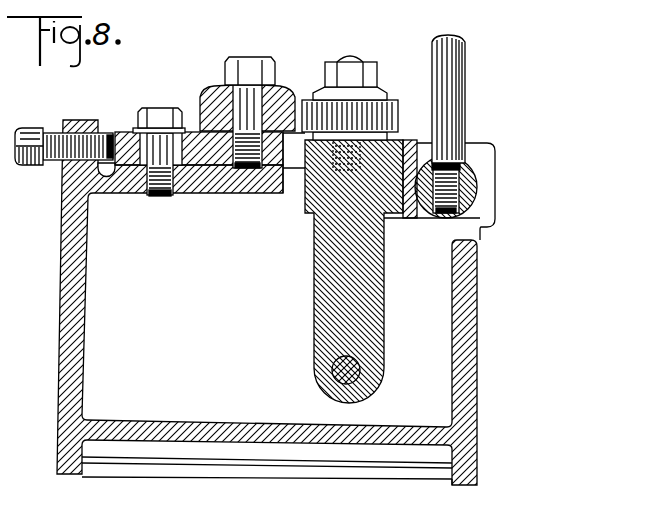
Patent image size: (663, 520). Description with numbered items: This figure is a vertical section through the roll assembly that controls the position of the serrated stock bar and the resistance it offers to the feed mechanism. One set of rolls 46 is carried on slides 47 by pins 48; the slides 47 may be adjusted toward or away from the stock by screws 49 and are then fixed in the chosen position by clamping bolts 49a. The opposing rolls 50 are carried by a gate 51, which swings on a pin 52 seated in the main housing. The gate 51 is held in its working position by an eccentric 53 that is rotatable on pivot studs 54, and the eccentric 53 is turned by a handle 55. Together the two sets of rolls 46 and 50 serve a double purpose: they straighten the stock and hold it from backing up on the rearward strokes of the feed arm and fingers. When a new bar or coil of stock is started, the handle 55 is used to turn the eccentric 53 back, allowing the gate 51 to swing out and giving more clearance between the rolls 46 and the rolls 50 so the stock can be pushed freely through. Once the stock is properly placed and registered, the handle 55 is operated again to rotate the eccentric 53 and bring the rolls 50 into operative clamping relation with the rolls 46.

The rolls 46 is at (200, 97).
The slides 47 is at (126, 134).
The pins 48 is at (248, 64).
The screws 49 is at (44, 167).
The clamping bolts 49a is at (157, 110).
The rolls 50 is at (398, 98).
The gate 51 is at (397, 139).
The pin 52 is at (357, 371).
The eccentric 53 is at (471, 176).
The pivot studs 54 is at (475, 195).
The handle 55 is at (464, 90).